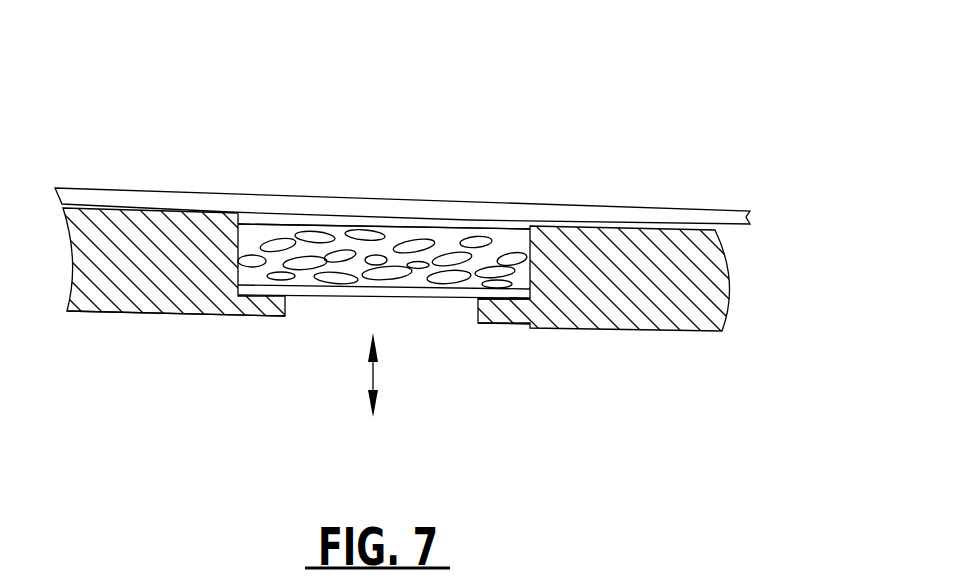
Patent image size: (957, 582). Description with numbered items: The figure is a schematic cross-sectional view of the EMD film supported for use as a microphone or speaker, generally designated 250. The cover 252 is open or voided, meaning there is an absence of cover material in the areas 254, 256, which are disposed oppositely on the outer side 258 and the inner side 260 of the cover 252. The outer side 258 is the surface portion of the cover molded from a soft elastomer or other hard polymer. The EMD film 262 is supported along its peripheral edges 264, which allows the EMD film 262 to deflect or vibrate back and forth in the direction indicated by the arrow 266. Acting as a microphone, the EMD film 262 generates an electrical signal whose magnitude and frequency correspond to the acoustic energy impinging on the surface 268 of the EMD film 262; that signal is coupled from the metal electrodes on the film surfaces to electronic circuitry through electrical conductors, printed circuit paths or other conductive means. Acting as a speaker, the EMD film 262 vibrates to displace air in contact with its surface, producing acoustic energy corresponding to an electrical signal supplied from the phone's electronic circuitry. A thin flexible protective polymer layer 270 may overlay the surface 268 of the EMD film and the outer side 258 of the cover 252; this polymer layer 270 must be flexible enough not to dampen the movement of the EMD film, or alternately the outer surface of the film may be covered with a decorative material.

The EMD film supported for use as a microphone or speaker 250 is at (422, 239).
The cover 252 is at (708, 256).
The area 254 is at (312, 190).
The area 256 is at (307, 321).
The outer side 258 is at (148, 203).
The inner side 260 is at (132, 316).
The EMD film 262 is at (273, 260).
The peripheral edges 264 is at (492, 302).
The arrow 266 is at (375, 376).
The surface 268 is at (268, 222).
The thin flexible protective polymer layer 270 is at (477, 218).